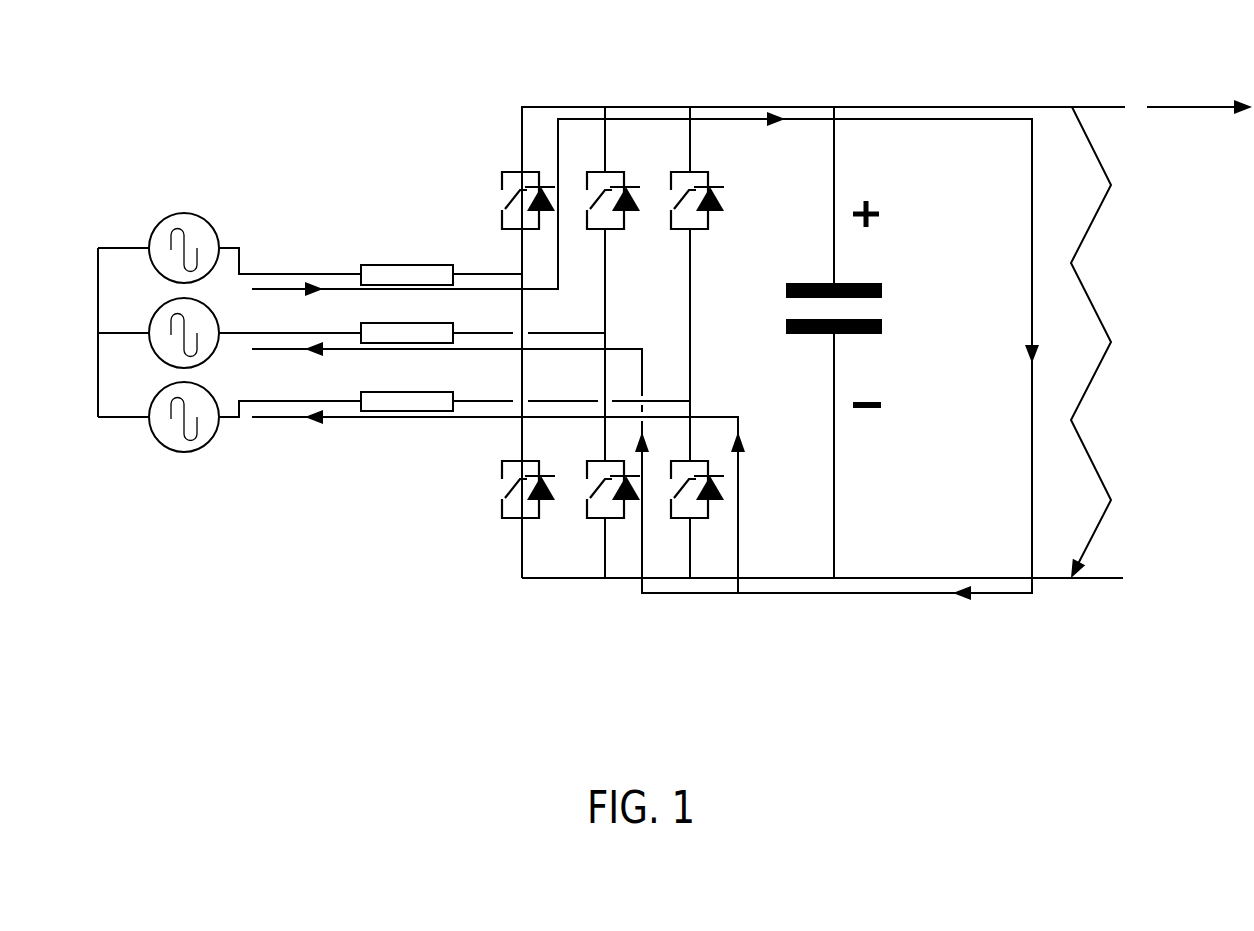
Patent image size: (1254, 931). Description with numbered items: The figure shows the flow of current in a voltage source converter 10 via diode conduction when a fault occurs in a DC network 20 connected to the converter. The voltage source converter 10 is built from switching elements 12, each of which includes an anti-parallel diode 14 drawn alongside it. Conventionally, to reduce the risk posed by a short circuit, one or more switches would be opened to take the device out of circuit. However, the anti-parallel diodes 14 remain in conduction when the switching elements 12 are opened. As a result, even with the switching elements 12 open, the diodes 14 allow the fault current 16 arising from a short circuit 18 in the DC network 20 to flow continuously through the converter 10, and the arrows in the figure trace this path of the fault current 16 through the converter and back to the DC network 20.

The voltage source converter 10 is at (393, 128).
The switching elements 12 is at (504, 196).
The anti-parallel diodes 14 is at (556, 188).
The fault current 16 is at (815, 595).
The short circuit 18 is at (1104, 324).
The DC network 20 is at (1178, 106).